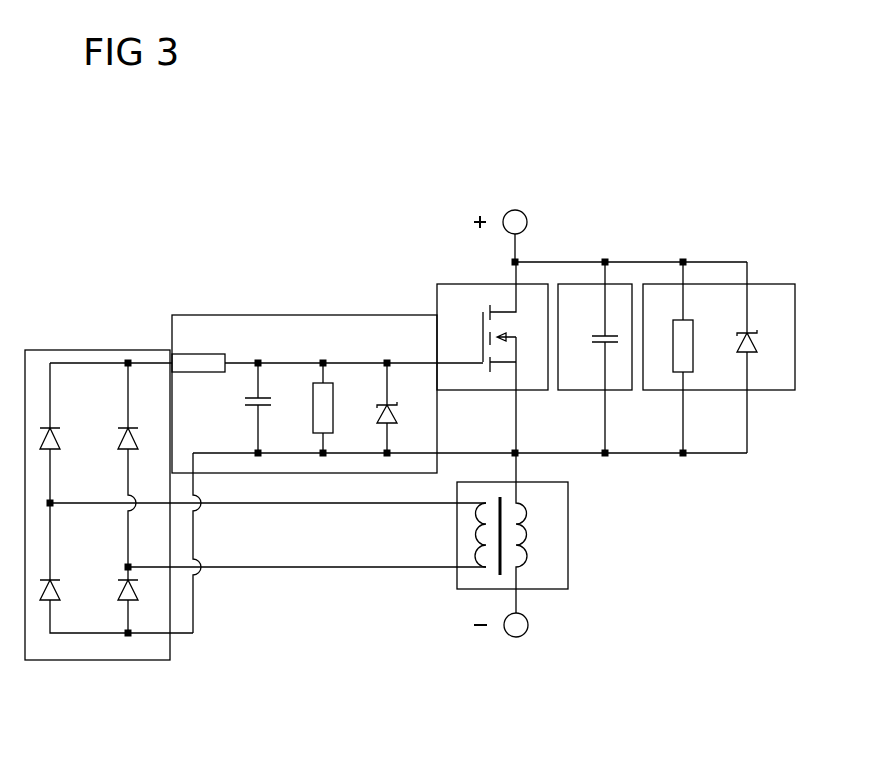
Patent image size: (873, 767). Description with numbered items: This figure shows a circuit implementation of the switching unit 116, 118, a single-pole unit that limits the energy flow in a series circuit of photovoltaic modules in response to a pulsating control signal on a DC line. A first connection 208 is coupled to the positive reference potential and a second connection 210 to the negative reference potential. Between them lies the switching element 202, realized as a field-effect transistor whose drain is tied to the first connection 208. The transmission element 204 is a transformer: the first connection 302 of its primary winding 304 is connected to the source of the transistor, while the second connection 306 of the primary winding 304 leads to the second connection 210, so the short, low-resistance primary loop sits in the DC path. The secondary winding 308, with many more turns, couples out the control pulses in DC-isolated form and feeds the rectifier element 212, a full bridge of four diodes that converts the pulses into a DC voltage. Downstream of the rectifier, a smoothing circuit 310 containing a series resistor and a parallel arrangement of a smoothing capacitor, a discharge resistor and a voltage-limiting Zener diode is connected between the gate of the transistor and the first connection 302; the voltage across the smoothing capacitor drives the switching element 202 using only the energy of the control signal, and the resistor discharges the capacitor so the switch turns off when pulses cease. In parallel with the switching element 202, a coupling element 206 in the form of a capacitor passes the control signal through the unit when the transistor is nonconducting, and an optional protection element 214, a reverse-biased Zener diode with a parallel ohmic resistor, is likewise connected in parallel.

The switching unit 116 is at (618, 112).
The switching unit 118 is at (429, 384).
The switching element 202 is at (445, 290).
The transmission element 204 is at (570, 530).
The coupling element 206 is at (617, 290).
The first connection 208 is at (524, 214).
The second connection 210 is at (503, 645).
The rectifier element 212 is at (102, 648).
The protection element 214 is at (763, 290).
The first connection of the primary winding 302 is at (537, 456).
The primary winding 304 is at (535, 538).
The second connection of the primary winding 306 is at (522, 597).
The secondary winding 308 is at (467, 542).
The gate control circuit 310 is at (215, 328).